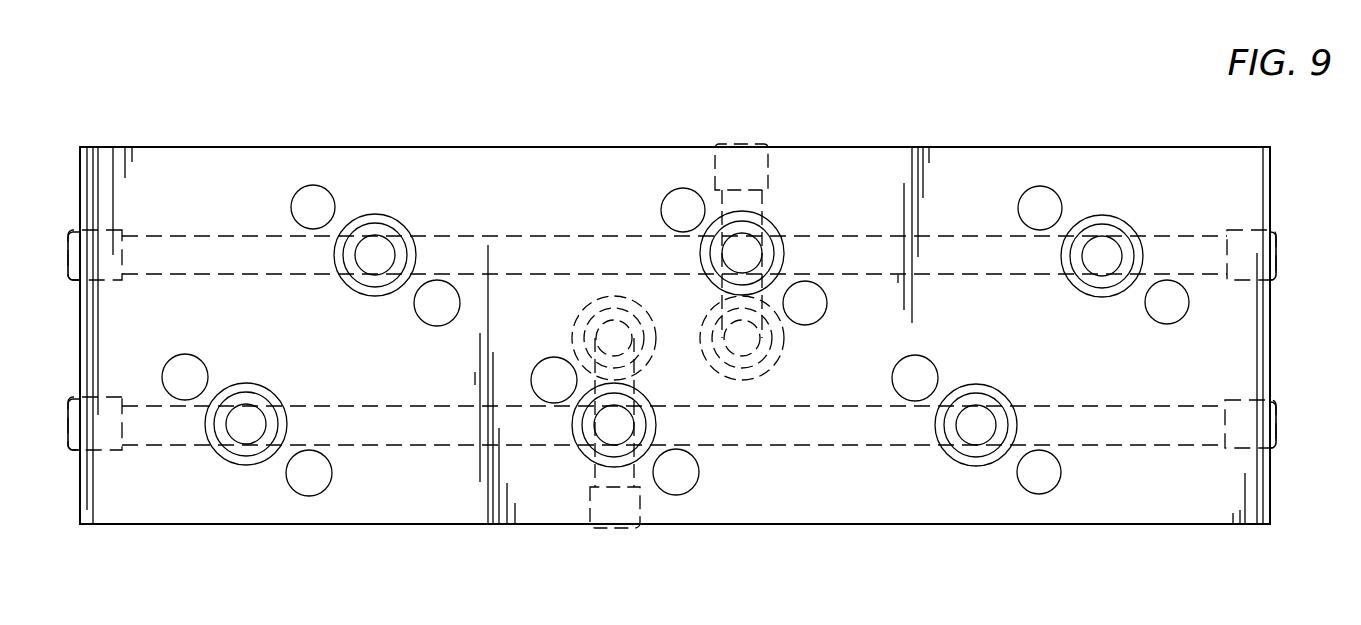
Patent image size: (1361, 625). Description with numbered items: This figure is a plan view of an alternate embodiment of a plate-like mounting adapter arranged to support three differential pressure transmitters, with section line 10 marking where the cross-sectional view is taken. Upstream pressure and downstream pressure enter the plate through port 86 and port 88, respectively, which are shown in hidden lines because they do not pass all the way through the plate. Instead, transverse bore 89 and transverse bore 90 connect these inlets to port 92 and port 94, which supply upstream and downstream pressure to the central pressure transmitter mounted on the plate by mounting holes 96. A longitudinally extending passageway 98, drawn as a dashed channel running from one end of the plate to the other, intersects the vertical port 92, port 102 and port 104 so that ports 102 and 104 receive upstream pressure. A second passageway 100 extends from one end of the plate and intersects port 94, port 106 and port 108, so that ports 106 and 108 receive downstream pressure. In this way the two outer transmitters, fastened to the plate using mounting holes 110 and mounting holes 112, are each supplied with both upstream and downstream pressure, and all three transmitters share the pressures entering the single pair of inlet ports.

The section line 10- 10 is at (614, 283).
The port 86 is at (630, 333).
The port 88 is at (757, 342).
The transverse bore 89 is at (630, 473).
The transverse bore 90 is at (758, 200).
The port 92 is at (607, 430).
The port 94 is at (755, 253).
The mounting holes 96 is at (683, 192).
The longitudinally extending passageway 98 is at (1178, 435).
The passageway 100 is at (968, 243).
The port 102 is at (242, 435).
The port 104 is at (975, 438).
The port 106 is at (378, 248).
The port 108 is at (1100, 247).
The mounting holes 110 is at (314, 193).
The mounting holes 112 is at (1042, 195).